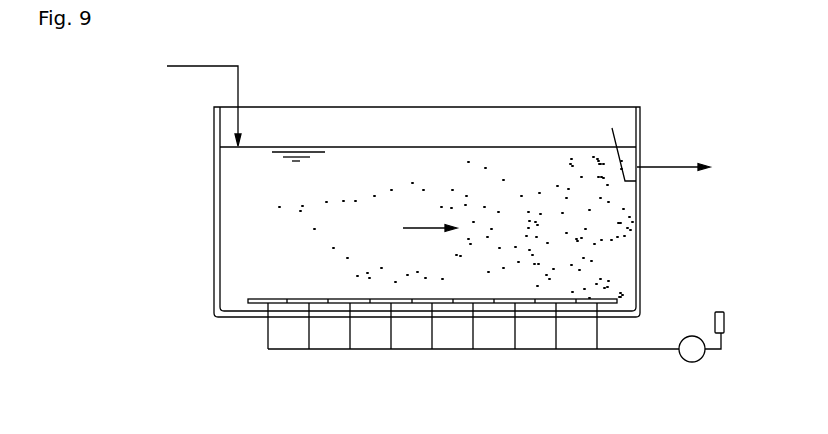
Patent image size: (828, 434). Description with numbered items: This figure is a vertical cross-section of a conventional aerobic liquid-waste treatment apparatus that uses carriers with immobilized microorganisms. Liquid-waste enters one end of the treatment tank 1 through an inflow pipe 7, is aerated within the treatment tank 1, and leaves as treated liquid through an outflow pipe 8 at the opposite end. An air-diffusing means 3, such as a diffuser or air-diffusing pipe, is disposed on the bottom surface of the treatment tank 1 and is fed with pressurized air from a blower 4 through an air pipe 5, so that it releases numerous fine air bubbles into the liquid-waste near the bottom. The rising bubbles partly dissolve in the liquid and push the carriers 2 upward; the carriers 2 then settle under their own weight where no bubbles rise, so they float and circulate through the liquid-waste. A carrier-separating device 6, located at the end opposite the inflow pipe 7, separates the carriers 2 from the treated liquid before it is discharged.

The treatment tank 1 is at (386, 106).
The carriers 2 is at (625, 257).
The air-diffusing means 3 is at (258, 303).
The blower 4 is at (688, 336).
The air pipe 5 is at (486, 350).
The carrier-separating device 6 is at (613, 130).
The inflow pipe 7 is at (176, 68).
The outflow pipe 8 is at (683, 169).